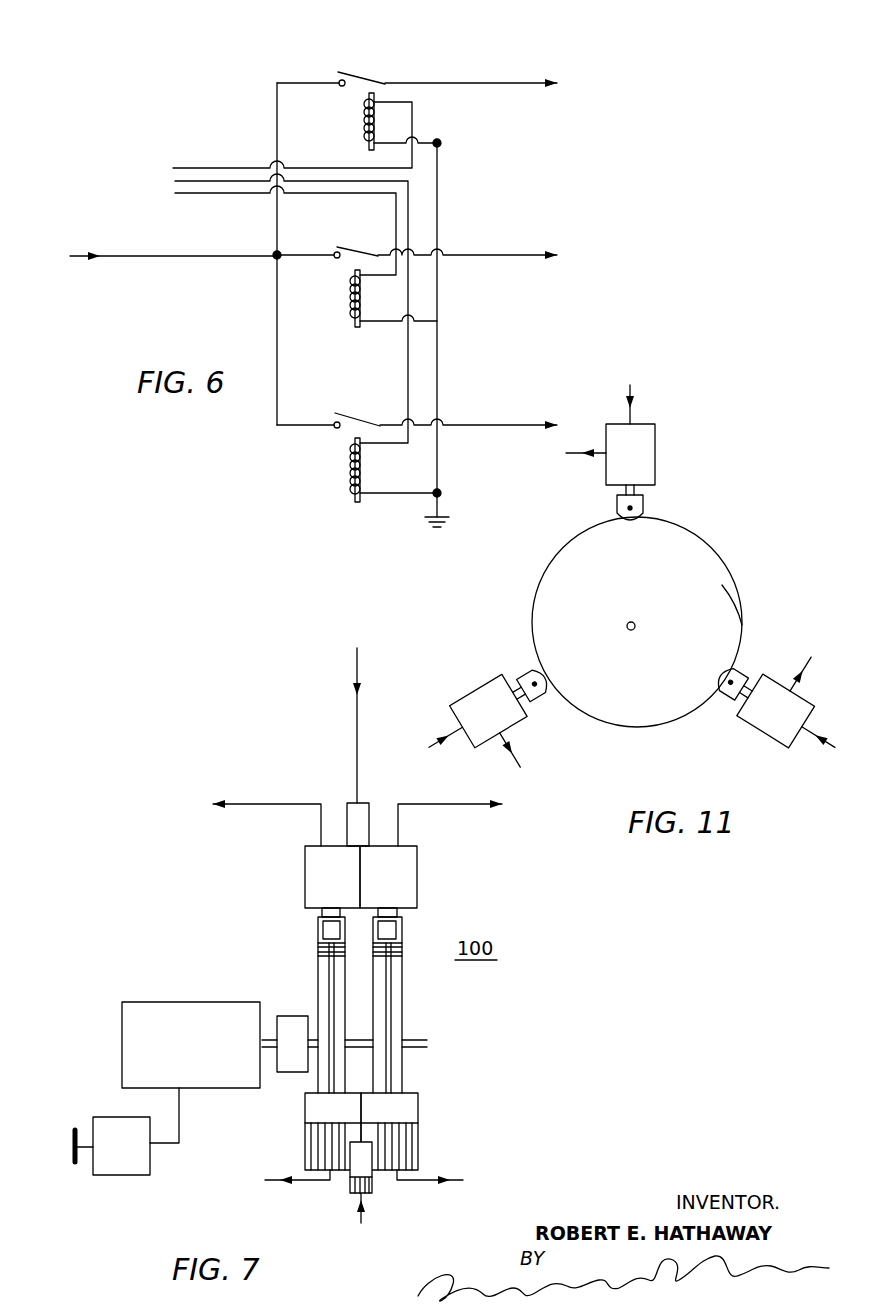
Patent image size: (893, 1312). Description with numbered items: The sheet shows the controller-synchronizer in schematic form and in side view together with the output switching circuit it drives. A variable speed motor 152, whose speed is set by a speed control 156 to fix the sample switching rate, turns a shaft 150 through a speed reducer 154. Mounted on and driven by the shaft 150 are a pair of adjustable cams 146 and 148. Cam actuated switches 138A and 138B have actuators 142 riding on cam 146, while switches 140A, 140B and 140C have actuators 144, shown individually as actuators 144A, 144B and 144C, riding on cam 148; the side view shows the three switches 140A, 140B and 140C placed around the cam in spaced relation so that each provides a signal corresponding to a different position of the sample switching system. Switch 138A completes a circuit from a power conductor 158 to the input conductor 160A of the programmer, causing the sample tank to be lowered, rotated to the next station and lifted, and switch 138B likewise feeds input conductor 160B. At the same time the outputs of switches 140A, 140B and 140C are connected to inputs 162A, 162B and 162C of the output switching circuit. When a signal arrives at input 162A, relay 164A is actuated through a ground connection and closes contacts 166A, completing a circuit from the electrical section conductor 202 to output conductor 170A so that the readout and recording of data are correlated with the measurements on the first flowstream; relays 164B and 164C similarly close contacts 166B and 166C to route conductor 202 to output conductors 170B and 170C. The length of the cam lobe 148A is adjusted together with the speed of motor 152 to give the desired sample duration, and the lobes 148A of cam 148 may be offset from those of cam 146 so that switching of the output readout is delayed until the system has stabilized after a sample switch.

In FIG. 7, the cam actuated switch 138A is at (318, 876).
In FIG. 7, the cam actuated switch 138B is at (314, 1148).
In FIG. 11, the cam actuated switch 140A is at (648, 452).
In FIG. 7, the cam actuated switch 140A is at (404, 880).
In FIG. 11, the cam actuated switch 140B is at (488, 688).
In FIG. 7, the cam actuated switch 140B is at (410, 1146).
In FIG. 11, the cam actuated switch 140C is at (760, 720).
In FIG. 7, the actuator 142 is at (318, 932).
In FIG. 7, the actuator 144 is at (400, 930).
In FIG. 11, the actuator 144A is at (640, 517).
In FIG. 11, the actuator 144B is at (540, 676).
In FIG. 11, the actuator 144C is at (722, 673).
In FIG. 7, the adjustable cam 146 is at (324, 994).
In FIG. 11, the adjustable cam 148 is at (580, 570).
In FIG. 7, the adjustable cam 148 is at (394, 1008).
In FIG. 11, the cam lobe 148A is at (723, 581).
In FIG. 11, the shaft 150 is at (634, 622).
In FIG. 7, the shaft 150 is at (425, 1040).
In FIG. 7, the variable speed motor 152 is at (182, 1002).
In FIG. 7, the speed reducer 154 is at (292, 1062).
In FIG. 7, the speed control 156 is at (128, 1162).
In FIG. 11, the power conductor 158 is at (634, 404).
In FIG. 7, the power conductor 158 is at (356, 706).
In FIG. 7, the input conductor 160A is at (274, 803).
In FIG. 7, the input conductor 160B is at (306, 1184).
In FIG. 6, the input 162A is at (188, 168).
In FIG. 11, the input 162A is at (586, 453).
In FIG. 7, the input 162A is at (446, 804).
In FIG. 6, the input 162B is at (175, 181).
In FIG. 11, the input 162B is at (510, 751).
In FIG. 7, the input 162B is at (436, 1187).
In FIG. 6, the input 162C is at (194, 193).
In FIG. 11, the input 162C is at (780, 674).
In FIG. 6, the relay 164A is at (372, 126).
In FIG. 6, the relay 164B is at (354, 298).
In FIG. 6, the relay 164C is at (350, 478).
In FIG. 6, the contacts 166A is at (357, 78).
In FIG. 6, the contacts 166B is at (348, 249).
In FIG. 6, the contacts 166C is at (348, 410).
In FIG. 6, the output conductor 170A is at (478, 83).
In FIG. 6, the output conductor 170B is at (482, 253).
In FIG. 6, the output conductor 170C is at (512, 411).
In FIG. 6, the electrical section conductor 202 is at (132, 256).